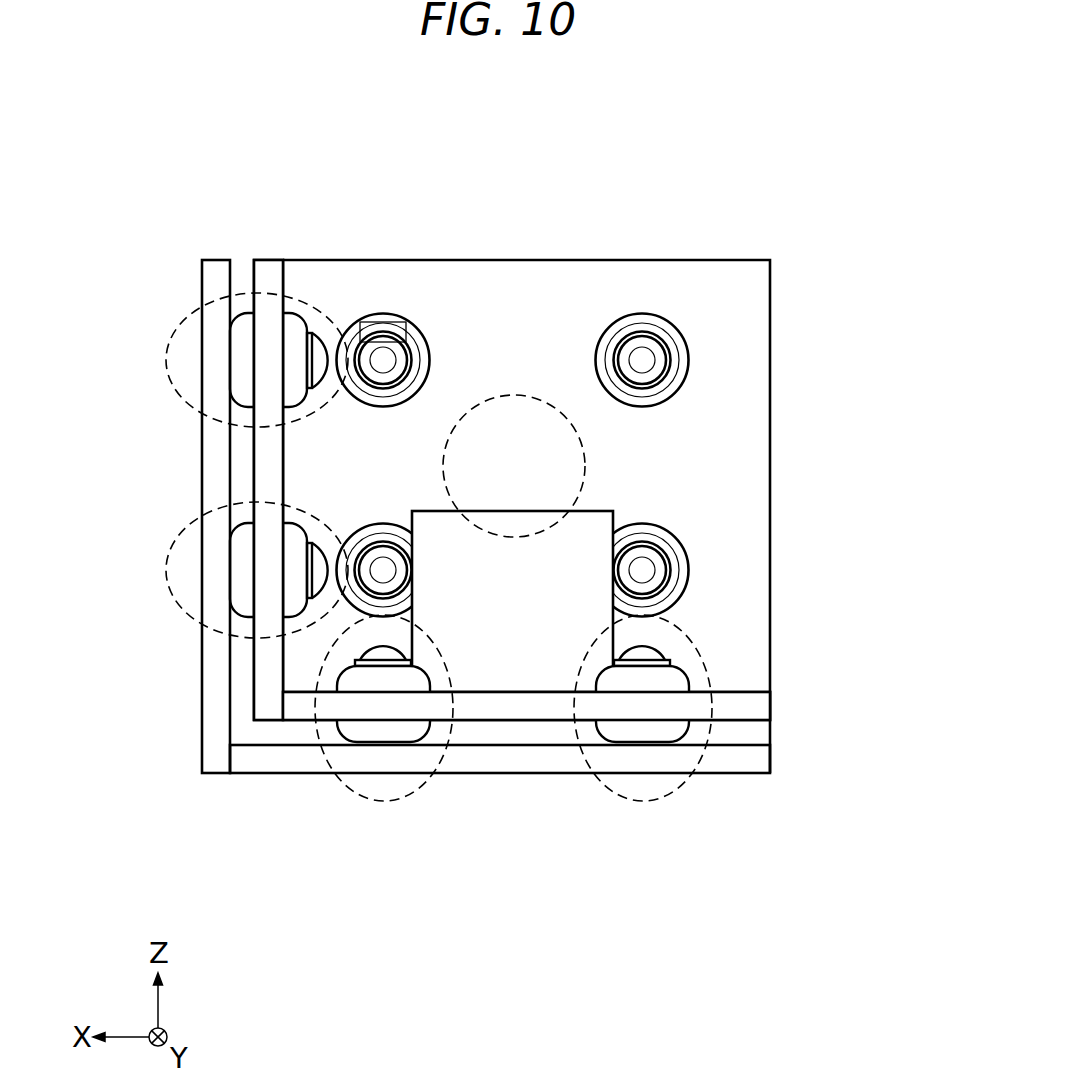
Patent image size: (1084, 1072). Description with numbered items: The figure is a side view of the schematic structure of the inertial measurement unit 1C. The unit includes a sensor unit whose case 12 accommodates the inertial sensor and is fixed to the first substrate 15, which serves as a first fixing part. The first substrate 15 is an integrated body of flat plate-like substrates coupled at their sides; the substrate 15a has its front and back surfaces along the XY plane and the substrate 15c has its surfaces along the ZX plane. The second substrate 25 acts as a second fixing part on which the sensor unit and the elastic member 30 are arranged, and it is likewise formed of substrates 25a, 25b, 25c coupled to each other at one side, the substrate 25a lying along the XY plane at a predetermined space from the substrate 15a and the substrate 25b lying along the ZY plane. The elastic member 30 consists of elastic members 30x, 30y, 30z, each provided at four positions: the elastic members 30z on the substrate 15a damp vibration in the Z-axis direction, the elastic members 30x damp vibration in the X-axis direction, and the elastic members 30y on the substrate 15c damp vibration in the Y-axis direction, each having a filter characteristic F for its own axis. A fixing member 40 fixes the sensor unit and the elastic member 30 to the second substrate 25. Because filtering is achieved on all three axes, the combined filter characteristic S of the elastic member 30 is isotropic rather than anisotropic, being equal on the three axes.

The inertial measurement unit 1C is at (882, 160).
The case 12 is at (529, 664).
The first substrate 15 is at (750, 622).
The substrate 15a is at (755, 707).
The substrate 15c is at (755, 497).
The second substrate 25 is at (363, 860).
The substrate 25a is at (353, 757).
The substrate 25b is at (270, 265).
The substrate 25c is at (278, 735).
The elastic member 30 is at (385, 188).
The elastic member 30x is at (237, 360).
The elastic member 30y is at (385, 322).
The elastic member 30z is at (385, 735).
The fixing member 40 is at (400, 358).
The combined filter characteristic S is at (553, 405).
The filter characteristic F is at (192, 405).